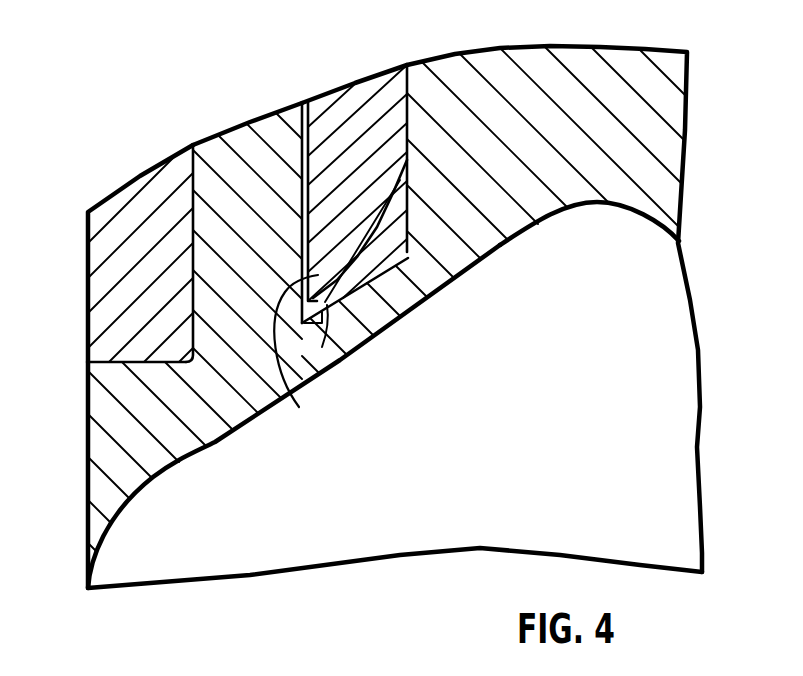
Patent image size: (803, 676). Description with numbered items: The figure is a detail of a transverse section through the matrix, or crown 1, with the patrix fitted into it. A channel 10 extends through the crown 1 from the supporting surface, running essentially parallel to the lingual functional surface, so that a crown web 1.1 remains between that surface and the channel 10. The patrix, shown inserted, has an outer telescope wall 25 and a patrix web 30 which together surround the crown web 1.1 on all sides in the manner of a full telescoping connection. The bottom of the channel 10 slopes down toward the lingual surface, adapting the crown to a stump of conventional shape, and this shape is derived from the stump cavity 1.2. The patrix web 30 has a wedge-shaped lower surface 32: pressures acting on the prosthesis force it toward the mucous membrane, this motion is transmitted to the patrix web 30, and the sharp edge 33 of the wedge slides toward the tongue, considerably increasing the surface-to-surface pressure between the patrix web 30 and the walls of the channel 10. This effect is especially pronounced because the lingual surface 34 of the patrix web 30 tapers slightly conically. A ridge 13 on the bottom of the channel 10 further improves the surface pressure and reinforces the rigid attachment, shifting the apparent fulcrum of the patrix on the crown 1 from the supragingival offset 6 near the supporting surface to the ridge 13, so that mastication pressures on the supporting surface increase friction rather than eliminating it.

The crown 1 is at (520, 87).
The web 1.1 is at (243, 177).
The stump cavity 1.2 is at (455, 510).
The outer telescope wall 25 is at (110, 278).
The supragingival offset 6 is at (120, 362).
The patrix web 30 is at (352, 112).
The channel 10 is at (400, 221).
The ridge 13 is at (362, 288).
The lower surface 32 is at (418, 298).
The sharp edge 33 is at (324, 312).
The lingual surface 34 is at (296, 362).